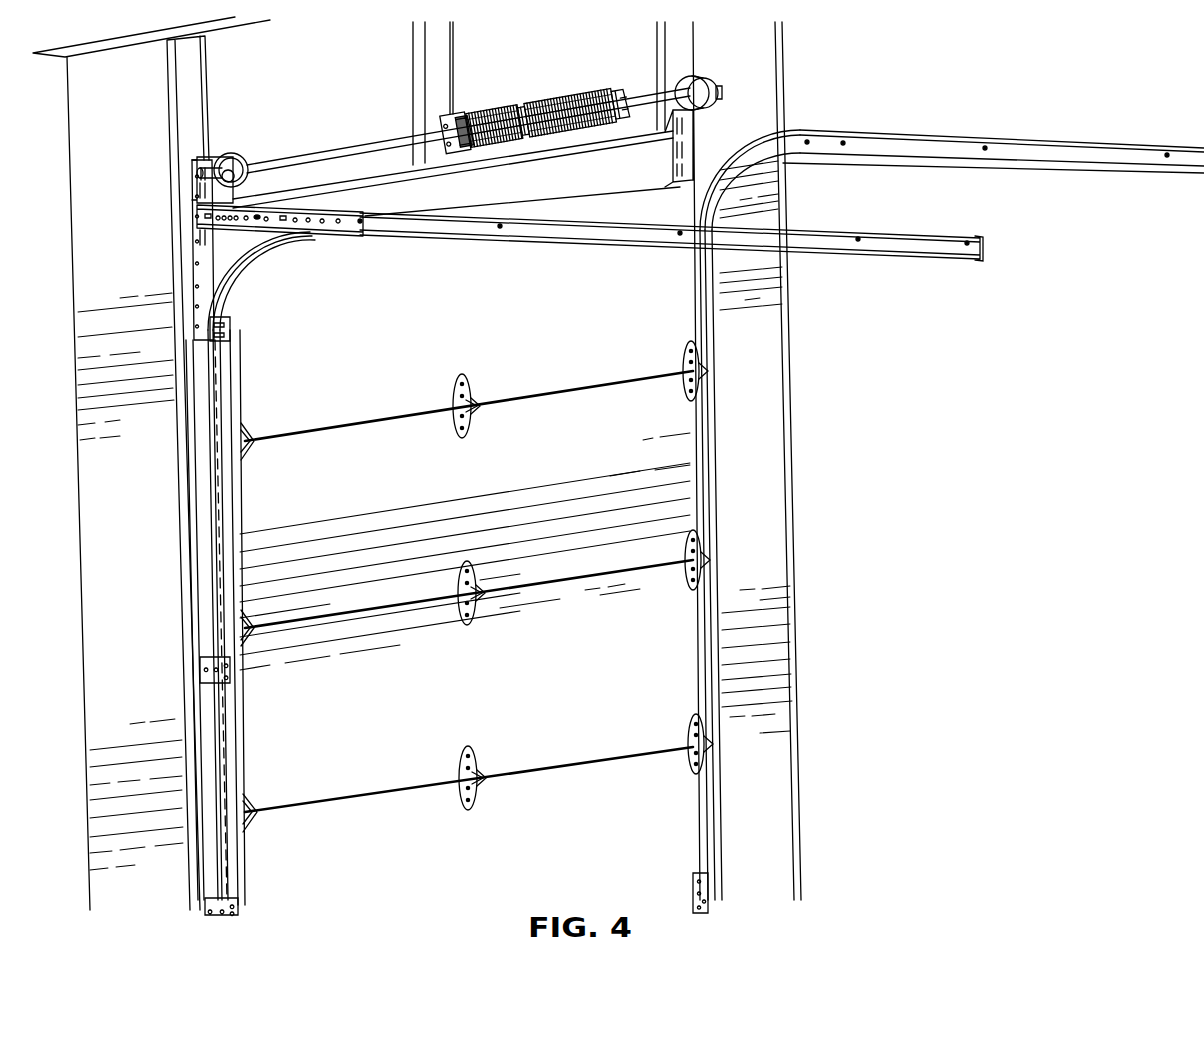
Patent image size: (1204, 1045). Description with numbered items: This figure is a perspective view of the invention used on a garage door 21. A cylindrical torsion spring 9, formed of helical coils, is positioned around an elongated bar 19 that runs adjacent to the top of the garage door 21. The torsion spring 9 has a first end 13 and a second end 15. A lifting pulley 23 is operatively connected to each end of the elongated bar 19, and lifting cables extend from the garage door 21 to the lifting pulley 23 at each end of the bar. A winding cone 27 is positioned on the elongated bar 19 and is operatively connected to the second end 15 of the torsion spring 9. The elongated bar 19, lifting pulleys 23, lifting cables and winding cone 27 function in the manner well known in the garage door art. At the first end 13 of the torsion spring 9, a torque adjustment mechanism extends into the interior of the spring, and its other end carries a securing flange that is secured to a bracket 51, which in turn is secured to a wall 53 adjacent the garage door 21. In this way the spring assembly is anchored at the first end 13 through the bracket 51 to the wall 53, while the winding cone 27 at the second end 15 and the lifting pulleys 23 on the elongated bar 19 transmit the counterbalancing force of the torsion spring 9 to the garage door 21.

The cylindrical torsion spring 9 is at (538, 84).
The first end 13 is at (487, 108).
The second end 15 is at (588, 93).
The elongated bar 19 is at (302, 153).
The garage door 21 is at (474, 331).
The lifting pulley 23 is at (227, 148).
The winding cone 27 is at (613, 90).
The bracket 51 is at (455, 110).
The wall 53 is at (427, 50).